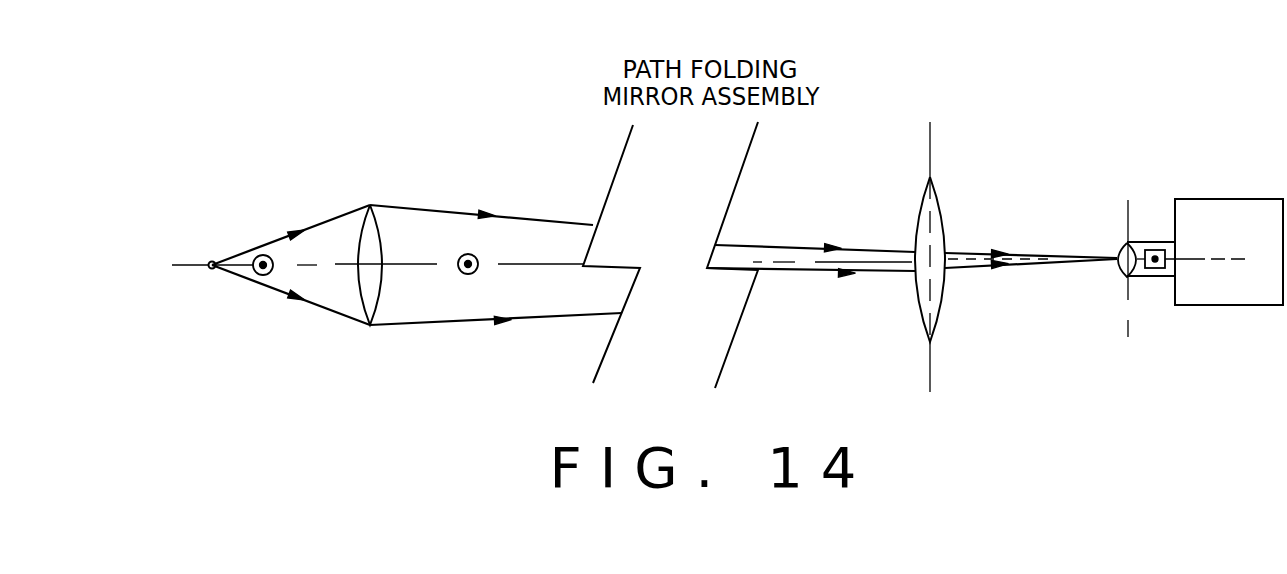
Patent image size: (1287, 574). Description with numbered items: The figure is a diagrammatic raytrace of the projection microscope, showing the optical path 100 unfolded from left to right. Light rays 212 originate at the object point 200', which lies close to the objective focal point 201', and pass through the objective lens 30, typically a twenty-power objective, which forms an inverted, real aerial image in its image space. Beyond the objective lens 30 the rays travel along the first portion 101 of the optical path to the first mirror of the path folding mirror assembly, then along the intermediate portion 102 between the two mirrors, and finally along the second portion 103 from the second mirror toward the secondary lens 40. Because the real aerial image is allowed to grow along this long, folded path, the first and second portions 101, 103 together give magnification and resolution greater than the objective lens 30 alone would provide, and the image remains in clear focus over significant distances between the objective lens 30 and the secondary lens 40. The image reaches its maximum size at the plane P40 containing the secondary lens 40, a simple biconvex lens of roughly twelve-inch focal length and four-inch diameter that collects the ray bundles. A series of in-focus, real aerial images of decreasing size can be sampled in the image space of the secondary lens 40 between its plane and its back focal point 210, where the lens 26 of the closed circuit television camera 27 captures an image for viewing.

The object point 200' is at (162, 230).
The objective focal point 201' is at (290, 211).
The objective lens 30 is at (359, 300).
The optical path 100 is at (508, 192).
The first portion of optical path 101 is at (543, 321).
The intermediate portion of optical path 102 is at (678, 268).
The light rays 212 is at (752, 243).
The second portion of optical path 103 is at (892, 275).
The plane containing the secondary lens P40 is at (932, 145).
The secondary lens 40 is at (943, 215).
The back focal point 210 is at (1155, 250).
The lens of the camera 26 is at (1120, 268).
The video camera 27 is at (1210, 305).